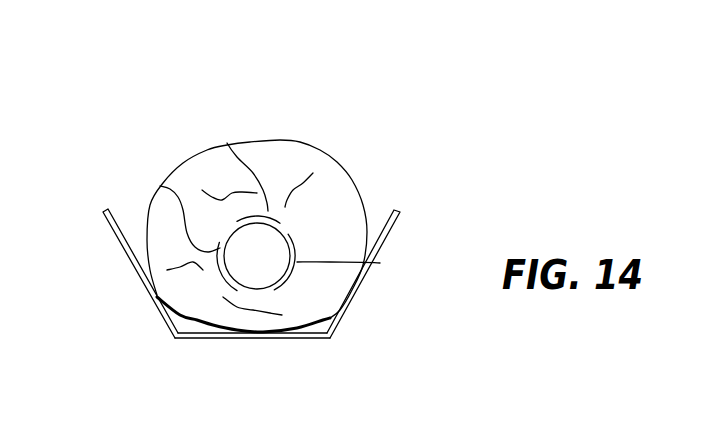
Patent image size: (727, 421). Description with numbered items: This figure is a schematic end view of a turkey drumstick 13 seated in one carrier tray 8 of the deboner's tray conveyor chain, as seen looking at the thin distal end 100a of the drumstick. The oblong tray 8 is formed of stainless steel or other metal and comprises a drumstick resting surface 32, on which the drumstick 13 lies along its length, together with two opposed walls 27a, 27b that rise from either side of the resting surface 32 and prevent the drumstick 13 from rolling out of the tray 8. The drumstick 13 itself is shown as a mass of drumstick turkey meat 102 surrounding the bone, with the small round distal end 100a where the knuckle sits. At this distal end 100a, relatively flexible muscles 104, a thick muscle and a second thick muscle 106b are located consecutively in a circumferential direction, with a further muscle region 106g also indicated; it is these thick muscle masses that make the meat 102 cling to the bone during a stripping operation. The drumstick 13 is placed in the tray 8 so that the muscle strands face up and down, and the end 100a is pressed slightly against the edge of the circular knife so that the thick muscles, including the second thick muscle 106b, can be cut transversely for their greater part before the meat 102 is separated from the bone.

The carrier tray 8 is at (116, 284).
The turkey drumstick 13 is at (321, 148).
The opposed wall 27a is at (156, 305).
The opposed wall 27b is at (348, 312).
The drumstick resting surface 32 is at (190, 332).
The drumstick turkey meat 102 is at (347, 198).
The muscles 104 is at (380, 263).
The second thick muscle 106b is at (227, 143).
The lobe 106g is at (163, 183).
The distal end 100a is at (250, 257).